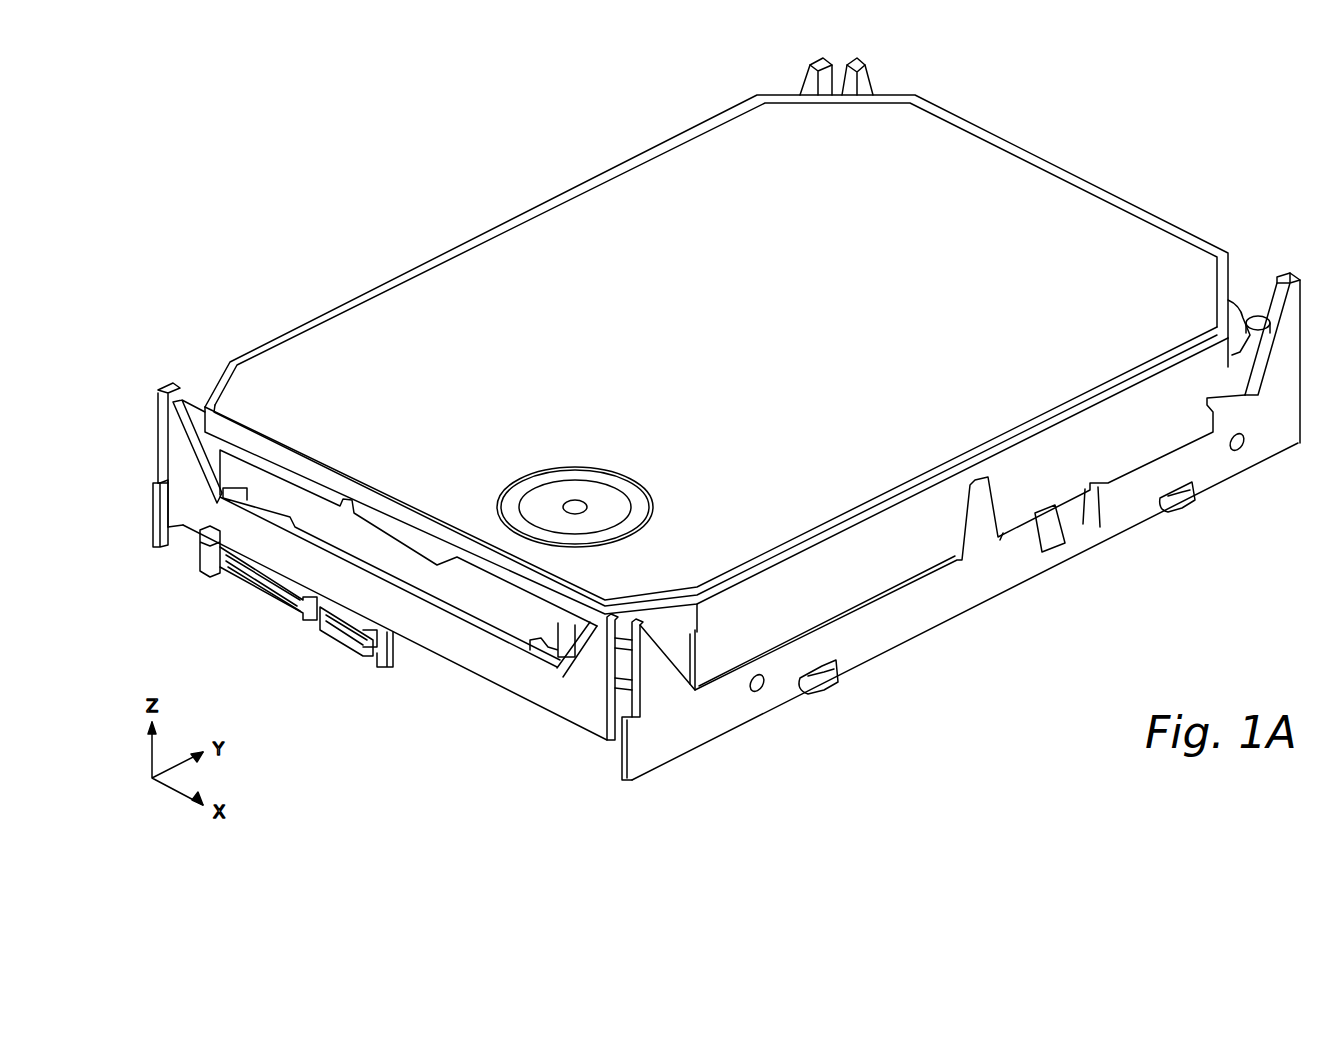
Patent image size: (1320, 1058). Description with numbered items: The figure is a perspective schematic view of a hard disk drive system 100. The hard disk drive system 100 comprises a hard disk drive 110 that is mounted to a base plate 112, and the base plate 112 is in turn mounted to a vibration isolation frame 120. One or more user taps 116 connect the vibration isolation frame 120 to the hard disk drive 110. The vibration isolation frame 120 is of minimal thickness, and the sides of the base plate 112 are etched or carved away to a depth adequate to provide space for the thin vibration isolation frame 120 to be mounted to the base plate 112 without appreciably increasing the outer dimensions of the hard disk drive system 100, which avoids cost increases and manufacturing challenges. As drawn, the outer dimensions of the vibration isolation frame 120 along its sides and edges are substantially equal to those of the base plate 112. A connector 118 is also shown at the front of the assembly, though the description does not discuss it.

The hard disk drive system 100 is at (387, 170).
The hard disk drive 110 is at (1050, 190).
The base plate 112 is at (1240, 300).
The user taps 116 is at (1243, 452).
The connector 118 is at (255, 590).
The vibration isolation frame 120 is at (963, 618).